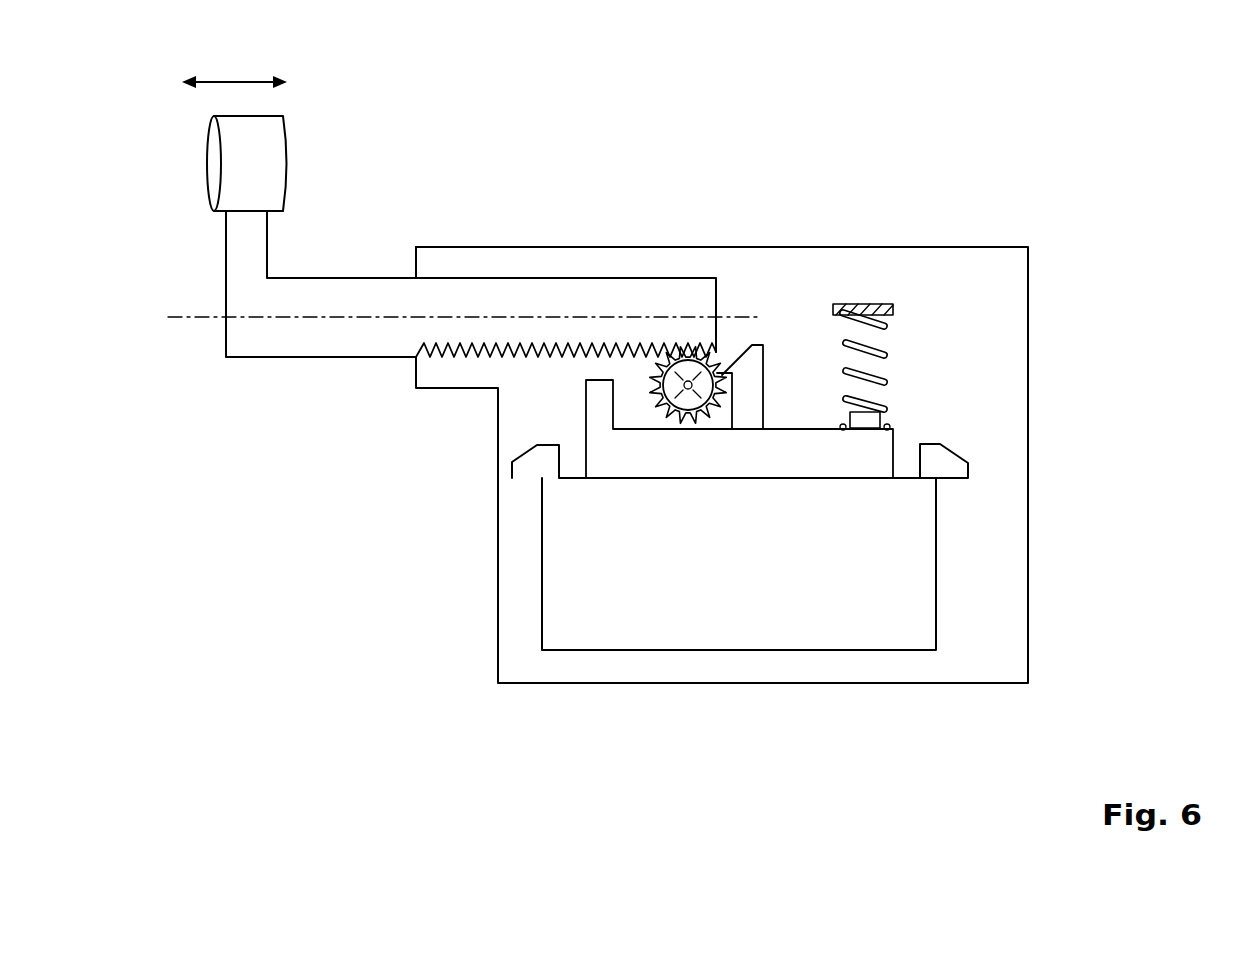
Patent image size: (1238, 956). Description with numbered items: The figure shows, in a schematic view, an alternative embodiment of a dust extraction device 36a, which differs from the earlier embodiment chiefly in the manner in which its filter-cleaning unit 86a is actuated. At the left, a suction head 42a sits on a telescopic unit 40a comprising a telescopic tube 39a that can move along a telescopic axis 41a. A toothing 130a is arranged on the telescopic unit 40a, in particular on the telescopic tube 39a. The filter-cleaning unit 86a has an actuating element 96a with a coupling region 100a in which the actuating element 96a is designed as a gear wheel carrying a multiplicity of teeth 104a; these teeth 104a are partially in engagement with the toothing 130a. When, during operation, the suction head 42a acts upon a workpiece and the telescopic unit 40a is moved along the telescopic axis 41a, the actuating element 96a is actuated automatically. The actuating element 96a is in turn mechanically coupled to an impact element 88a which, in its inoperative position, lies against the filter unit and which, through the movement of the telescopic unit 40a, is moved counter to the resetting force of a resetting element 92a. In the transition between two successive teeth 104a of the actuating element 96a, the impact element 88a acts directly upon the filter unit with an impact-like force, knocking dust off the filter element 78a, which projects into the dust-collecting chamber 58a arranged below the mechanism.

The dust extraction device 36a is at (1058, 200).
The telescopic tube 39a is at (358, 305).
The telescopic unit 40a is at (465, 260).
The telescopic axis 41a is at (195, 317).
The suction head 42a is at (180, 98).
The dust-collecting chamber 58a is at (474, 464).
The filter element 78a is at (565, 540).
The filter-cleaning unit 86a is at (800, 370).
The impact element 88a is at (757, 352).
The resetting element 92a is at (883, 352).
The actuating element 96a is at (690, 363).
The coupling region 100a is at (636, 369).
The teeth 104a is at (672, 362).
The toothing 130a is at (658, 358).